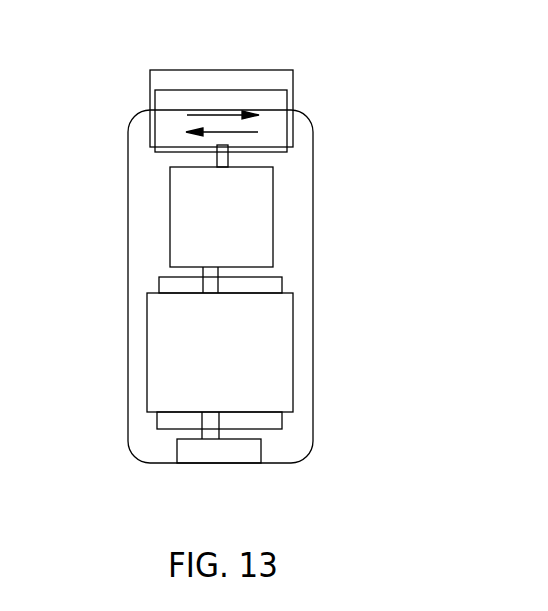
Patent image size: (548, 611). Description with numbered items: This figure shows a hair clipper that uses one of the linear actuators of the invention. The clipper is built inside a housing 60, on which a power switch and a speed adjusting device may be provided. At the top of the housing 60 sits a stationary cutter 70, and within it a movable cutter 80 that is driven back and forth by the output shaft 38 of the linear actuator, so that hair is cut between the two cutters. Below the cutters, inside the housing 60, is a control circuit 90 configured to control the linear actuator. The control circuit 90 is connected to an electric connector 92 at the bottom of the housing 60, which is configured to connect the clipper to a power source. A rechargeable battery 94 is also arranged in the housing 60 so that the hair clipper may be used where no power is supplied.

The output shaft 38 is at (220, 157).
The housing 60 is at (313, 207).
The stationary cutter 70 is at (172, 78).
The movable cutter 80 is at (168, 126).
The control circuit 90 is at (187, 352).
The electric connector 92 is at (210, 450).
The rechargeable battery 94 is at (268, 285).